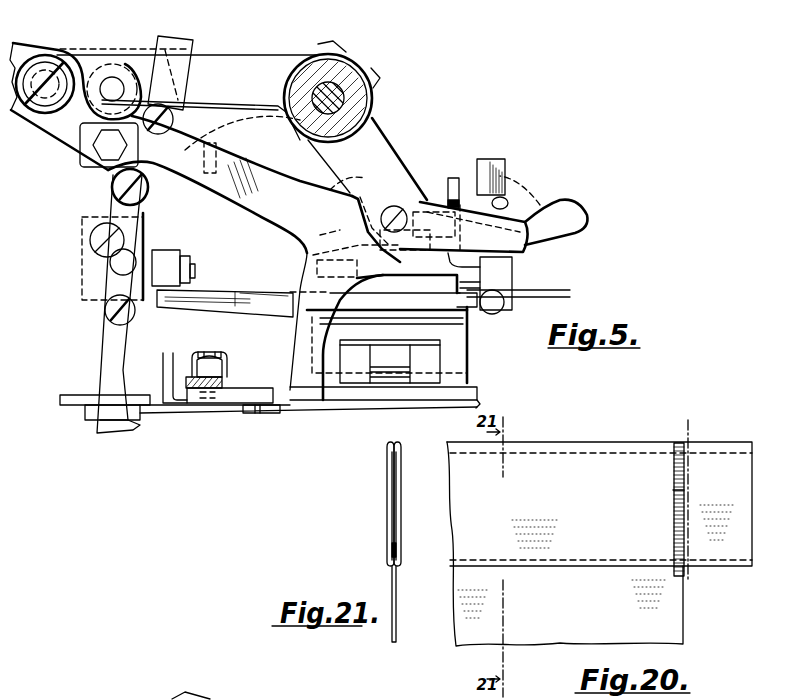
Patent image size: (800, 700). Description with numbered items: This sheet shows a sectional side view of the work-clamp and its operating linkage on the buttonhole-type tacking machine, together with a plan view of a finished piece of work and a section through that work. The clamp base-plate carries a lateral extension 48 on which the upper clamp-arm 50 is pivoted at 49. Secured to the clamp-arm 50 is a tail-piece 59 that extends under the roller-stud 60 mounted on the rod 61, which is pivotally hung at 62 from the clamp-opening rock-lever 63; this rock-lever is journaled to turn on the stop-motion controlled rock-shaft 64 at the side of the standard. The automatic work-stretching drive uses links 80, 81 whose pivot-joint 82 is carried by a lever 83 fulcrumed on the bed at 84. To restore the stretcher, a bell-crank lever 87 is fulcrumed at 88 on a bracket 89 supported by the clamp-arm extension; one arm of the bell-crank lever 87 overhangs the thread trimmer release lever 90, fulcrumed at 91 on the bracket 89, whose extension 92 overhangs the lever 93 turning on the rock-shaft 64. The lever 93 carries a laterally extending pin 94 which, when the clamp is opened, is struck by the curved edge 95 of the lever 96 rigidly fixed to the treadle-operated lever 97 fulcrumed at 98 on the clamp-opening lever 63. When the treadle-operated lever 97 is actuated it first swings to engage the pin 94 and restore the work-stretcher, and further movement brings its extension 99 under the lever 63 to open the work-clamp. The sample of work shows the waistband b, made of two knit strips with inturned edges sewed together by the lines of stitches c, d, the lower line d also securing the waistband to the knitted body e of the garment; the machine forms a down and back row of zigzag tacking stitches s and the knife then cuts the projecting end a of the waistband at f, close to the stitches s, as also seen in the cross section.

In FIG. 5, the lateral extension 48 is at (463, 394).
In FIG. 5, the pivot 49 is at (447, 352).
In FIG. 5, the upper clamp-arm 50 is at (450, 319).
In FIG. 5, the tail-piece 59 is at (213, 292).
In FIG. 5, the roller-stud 60 is at (168, 255).
In FIG. 5, the rod 61 is at (93, 315).
In FIG. 5, the pivot 62 is at (109, 77).
In FIG. 5, the clamp-opening rock-lever 63 is at (229, 57).
In FIG. 5, the stop-motion controlled rock-shaft 64 is at (360, 108).
In FIG. 5, the link 80 is at (193, 354).
In FIG. 5, the link 81 is at (228, 377).
In FIG. 5, the pivot-joint 82 is at (211, 352).
In FIG. 5, the lever 83 is at (222, 403).
In FIG. 5, the fulcrum 84 is at (283, 400).
In FIG. 5, the bell-crank lever 87 is at (452, 178).
In FIG. 5, the fulcrum 88 is at (409, 247).
In FIG. 5, the bracket 89 is at (313, 255).
In FIG. 5, the thread trimmer release lever 90 is at (502, 202).
In FIG. 5, the fulcrum 91 is at (365, 216).
In FIG. 5, the extension 92 is at (480, 182).
In FIG. 5, the lever 93 is at (548, 208).
In FIG. 5, the pin 94 is at (398, 205).
In FIG. 5, the curved edge 95 is at (404, 211).
In FIG. 5, the lever 96 is at (277, 213).
In FIG. 5, the treadle-operated lever 97 is at (62, 134).
In FIG. 5, the fulcrum 98 is at (46, 58).
In FIG. 5, the extension 99 is at (234, 142).
In FIG. 20, the projecting end a is at (713, 552).
In FIG. 21, the waistband b is at (388, 500).
In FIG. 20, the waistband b is at (575, 468).
In FIG. 21, the line of stitches c is at (402, 452).
In FIG. 20, the line of stitches c is at (626, 452).
In FIG. 21, the line of stitches d is at (401, 566).
In FIG. 20, the line of stitches d is at (578, 561).
In FIG. 21, the knitted body e is at (397, 621).
In FIG. 20, the knitted body e is at (679, 636).
In FIG. 20, the cut f is at (689, 484).
In FIG. 20, the zigzag tacking stitches s is at (672, 492).